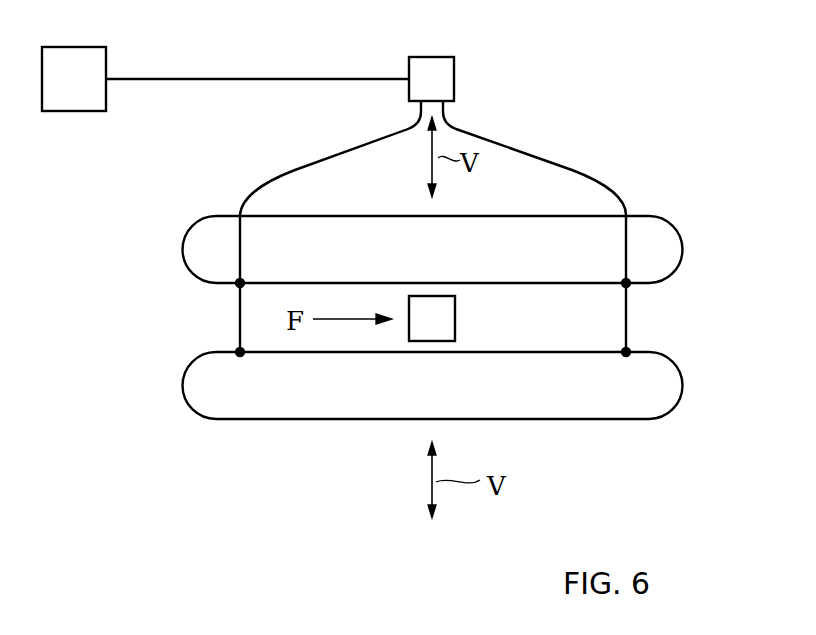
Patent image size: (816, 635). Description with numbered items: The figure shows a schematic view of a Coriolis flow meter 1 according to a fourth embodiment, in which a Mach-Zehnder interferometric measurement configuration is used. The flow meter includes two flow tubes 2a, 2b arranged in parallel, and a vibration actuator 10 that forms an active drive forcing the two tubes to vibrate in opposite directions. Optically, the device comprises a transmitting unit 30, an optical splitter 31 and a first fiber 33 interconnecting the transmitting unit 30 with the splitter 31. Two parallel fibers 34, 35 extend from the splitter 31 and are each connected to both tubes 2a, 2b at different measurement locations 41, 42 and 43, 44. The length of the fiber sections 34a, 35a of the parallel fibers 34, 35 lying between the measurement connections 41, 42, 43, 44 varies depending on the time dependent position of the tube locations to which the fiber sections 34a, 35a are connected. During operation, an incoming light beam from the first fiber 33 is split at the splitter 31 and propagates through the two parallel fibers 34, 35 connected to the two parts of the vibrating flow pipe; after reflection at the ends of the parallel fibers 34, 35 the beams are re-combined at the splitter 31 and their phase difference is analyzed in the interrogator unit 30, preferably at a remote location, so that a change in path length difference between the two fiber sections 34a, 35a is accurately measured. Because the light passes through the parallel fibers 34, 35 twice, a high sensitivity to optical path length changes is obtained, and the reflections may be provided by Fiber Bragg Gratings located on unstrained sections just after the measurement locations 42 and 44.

The Coriolis flow meter 1 is at (570, 113).
The flow tube 2a is at (445, 262).
The flow tube 2b is at (445, 400).
The vibration actuator 10 is at (456, 316).
The transmitting unit 30 is at (87, 91).
The optical splitter 31 is at (455, 78).
The first fiber 33 is at (158, 78).
The parallel fiber 34 is at (292, 170).
The fiber section 34a is at (240, 320).
The parallel fiber 35 is at (573, 170).
The fiber section 35a is at (628, 318).
The measurement location 41 is at (236, 284).
The measurement location 42 is at (238, 350).
The measurement location 43 is at (630, 285).
The measurement location 44 is at (630, 350).